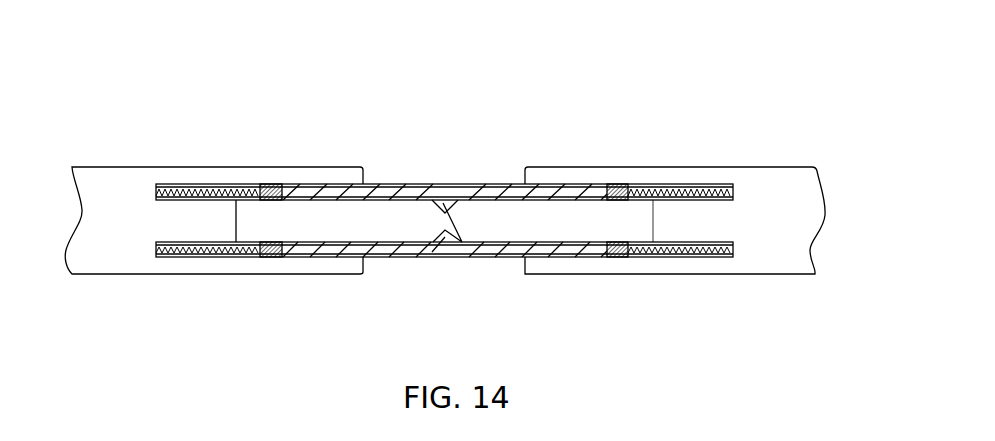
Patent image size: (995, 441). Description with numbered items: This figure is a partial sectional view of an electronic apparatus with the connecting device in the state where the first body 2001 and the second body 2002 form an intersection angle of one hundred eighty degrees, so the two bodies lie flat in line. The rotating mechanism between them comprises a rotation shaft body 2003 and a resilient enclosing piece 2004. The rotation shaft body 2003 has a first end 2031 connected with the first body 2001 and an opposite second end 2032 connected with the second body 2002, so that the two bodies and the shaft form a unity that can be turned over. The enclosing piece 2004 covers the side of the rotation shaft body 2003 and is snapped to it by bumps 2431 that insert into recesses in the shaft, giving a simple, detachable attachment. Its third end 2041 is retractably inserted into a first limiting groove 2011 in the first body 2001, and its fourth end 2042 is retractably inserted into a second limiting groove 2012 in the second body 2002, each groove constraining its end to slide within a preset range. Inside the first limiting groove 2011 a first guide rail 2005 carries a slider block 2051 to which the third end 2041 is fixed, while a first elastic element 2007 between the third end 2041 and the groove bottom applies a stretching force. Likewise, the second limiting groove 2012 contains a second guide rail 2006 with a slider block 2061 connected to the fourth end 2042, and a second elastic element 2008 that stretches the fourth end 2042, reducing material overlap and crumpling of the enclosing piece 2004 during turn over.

The first body 2001 is at (132, 184).
The second body 2002 is at (763, 184).
The rotation shaft body 2003 is at (392, 227).
The enclosing piece 2004 is at (526, 76).
The first guide rail 2005 is at (231, 184).
The second guide rail 2006 is at (659, 184).
The first elastic element 2007 is at (205, 201).
The second elastic element 2008 is at (676, 200).
The first limiting groove 2011 is at (218, 186).
The second limiting groove 2012 is at (688, 184).
The first end 2031 is at (252, 226).
The second end 2032 is at (633, 240).
The third end 2041 is at (303, 184).
The fourth end 2042 is at (561, 188).
The slider block 2051 is at (273, 184).
The slider block 2061 is at (614, 184).
The bumps 2431 is at (445, 213).